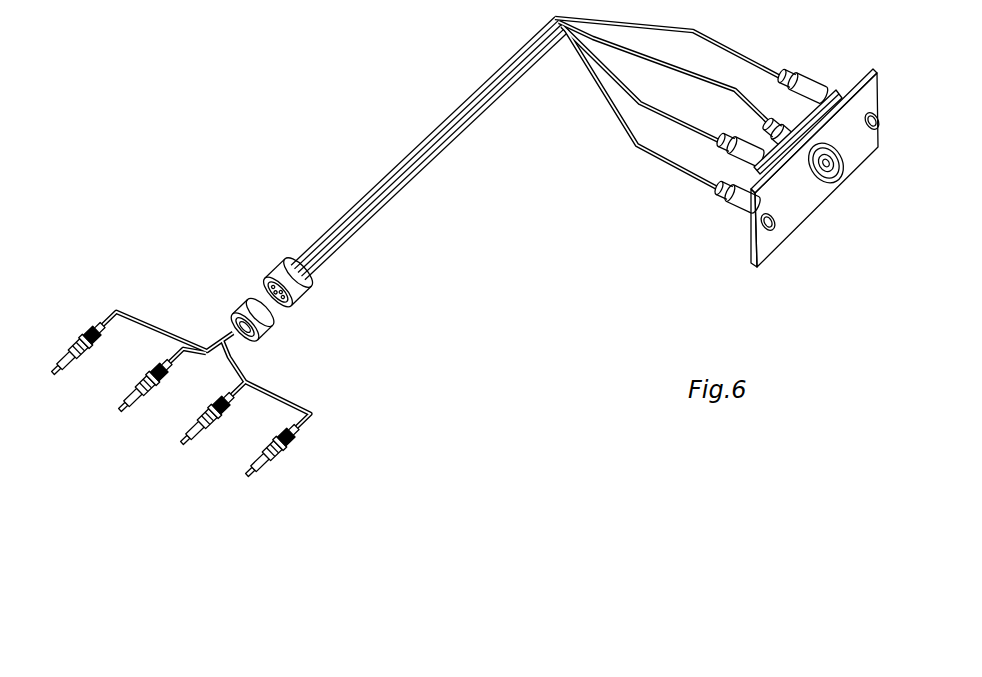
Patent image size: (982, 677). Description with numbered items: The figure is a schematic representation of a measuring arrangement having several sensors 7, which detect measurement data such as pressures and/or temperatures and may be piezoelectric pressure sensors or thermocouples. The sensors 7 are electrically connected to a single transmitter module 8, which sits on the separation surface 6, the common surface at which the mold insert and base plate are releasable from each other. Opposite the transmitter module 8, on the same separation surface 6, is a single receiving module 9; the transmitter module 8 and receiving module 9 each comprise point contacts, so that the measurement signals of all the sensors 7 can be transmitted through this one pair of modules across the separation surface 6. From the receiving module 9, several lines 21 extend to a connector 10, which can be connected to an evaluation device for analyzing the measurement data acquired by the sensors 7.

The separation surface 6 is at (284, 303).
The sensor 7 is at (204, 430).
The transmitter module 8 is at (270, 337).
The receiving module 9 is at (309, 297).
The connector 10 is at (752, 217).
The lines 21 is at (398, 192).